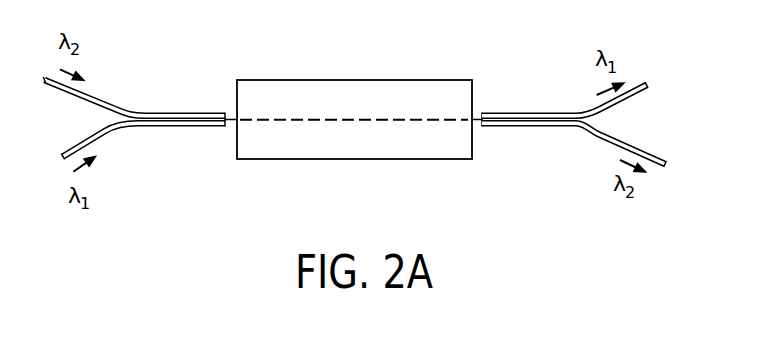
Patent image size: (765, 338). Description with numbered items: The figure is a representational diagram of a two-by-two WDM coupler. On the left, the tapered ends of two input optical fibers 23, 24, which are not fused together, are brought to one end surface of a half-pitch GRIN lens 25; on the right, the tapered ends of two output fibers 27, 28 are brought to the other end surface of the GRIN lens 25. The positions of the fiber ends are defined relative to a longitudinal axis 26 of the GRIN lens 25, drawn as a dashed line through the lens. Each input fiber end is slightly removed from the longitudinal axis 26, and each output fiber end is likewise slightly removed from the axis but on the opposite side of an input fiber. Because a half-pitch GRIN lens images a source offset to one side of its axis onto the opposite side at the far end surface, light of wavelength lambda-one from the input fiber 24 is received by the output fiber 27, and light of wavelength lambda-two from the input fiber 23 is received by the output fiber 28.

The input optical fiber 23 is at (98, 99).
The input optical fiber 24 is at (118, 130).
The half-pitch GRIN lens 25 is at (253, 148).
The longitudinal axis 26 is at (458, 120).
The output fiber 27 is at (578, 112).
The output fiber 28 is at (597, 137).